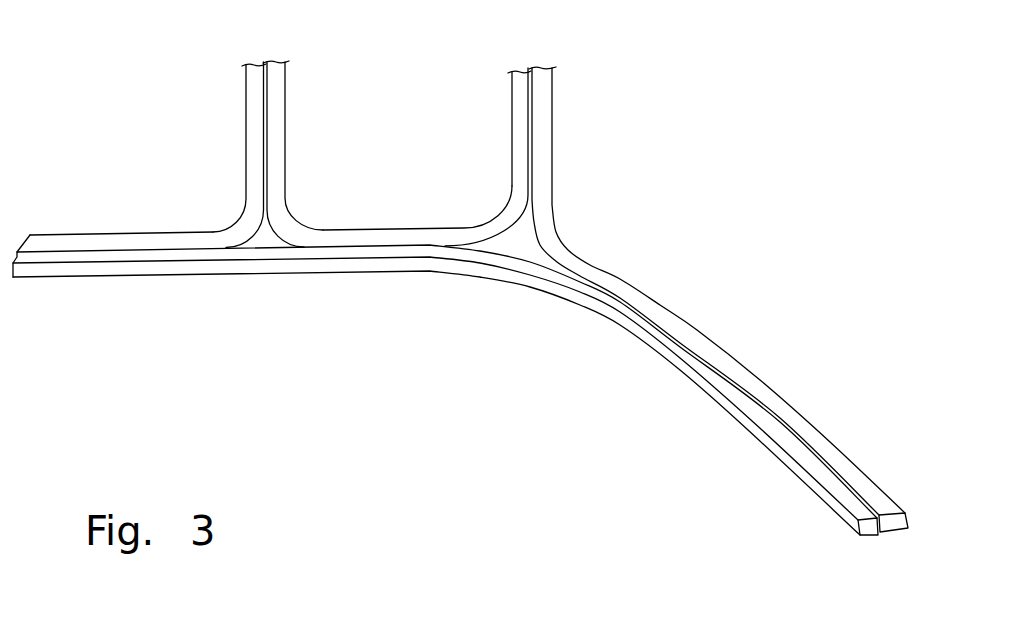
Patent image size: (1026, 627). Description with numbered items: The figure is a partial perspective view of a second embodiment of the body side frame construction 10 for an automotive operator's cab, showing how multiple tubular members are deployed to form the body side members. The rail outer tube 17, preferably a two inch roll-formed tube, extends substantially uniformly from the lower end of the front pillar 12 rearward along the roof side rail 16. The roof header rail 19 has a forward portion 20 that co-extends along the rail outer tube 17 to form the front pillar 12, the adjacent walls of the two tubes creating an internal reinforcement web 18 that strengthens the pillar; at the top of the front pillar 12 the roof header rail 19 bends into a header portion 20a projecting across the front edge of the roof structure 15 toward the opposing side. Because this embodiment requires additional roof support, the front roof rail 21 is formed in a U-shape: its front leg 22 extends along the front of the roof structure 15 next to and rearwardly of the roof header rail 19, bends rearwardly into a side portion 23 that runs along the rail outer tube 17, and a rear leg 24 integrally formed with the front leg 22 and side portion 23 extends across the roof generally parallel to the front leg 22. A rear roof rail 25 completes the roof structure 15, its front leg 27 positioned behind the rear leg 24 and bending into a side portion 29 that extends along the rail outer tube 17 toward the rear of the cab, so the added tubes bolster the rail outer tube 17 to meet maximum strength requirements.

The body side frame construction 10 is at (473, 310).
The front pillar 12 is at (473, 333).
The roof structure 15 is at (473, 310).
The roof side rail 16 is at (473, 333).
The rail outer tube 17 is at (500, 280).
The internal reinforcement web 18 is at (880, 533).
The roof header rail 19 is at (598, 266).
The forward portion 20 is at (712, 348).
The header portion 20a is at (541, 156).
The front roof rail 21 is at (285, 153).
The front leg 22 is at (518, 128).
The side portion 23 is at (403, 232).
The rear leg 24 is at (277, 155).
The rear roof rail 25 is at (67, 232).
The front leg 27 is at (253, 142).
The side portion 29 is at (133, 240).